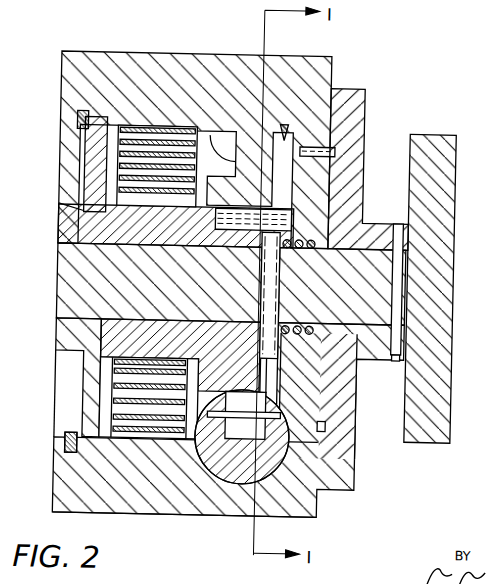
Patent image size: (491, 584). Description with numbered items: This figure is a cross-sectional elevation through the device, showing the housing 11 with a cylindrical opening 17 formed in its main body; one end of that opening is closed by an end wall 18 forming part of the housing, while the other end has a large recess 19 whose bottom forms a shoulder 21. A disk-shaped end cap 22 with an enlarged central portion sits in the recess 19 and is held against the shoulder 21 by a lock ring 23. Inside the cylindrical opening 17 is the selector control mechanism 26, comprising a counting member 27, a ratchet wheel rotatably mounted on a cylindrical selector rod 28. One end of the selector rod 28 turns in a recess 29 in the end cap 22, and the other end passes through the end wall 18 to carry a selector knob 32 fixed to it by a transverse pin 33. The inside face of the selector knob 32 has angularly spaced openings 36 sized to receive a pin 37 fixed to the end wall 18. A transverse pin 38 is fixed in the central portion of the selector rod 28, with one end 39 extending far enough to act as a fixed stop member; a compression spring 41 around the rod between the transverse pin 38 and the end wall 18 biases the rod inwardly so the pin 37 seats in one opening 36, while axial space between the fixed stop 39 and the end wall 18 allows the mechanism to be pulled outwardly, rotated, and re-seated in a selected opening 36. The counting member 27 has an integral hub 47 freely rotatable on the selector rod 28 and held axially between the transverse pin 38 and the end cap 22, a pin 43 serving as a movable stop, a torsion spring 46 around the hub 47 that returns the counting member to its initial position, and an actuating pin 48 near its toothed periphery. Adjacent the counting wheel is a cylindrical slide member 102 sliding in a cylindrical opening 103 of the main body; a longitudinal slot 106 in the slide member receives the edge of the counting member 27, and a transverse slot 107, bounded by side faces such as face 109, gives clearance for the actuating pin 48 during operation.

The housing 11 is at (116, 43).
The cylindrical opening 17 is at (201, 128).
The end wall 18 is at (316, 230).
The recess 19 is at (68, 440).
The shoulder 21 is at (79, 144).
The end cap 22 is at (90, 386).
The lock ring 23 is at (66, 121).
The selector control mechanism 26 is at (281, 124).
The counting member 27 is at (229, 131).
The selector rod 28 is at (78, 287).
The recess 29 is at (82, 316).
The selector knob 32 is at (422, 139).
The transverse pin 33 is at (386, 353).
The openings 36 is at (330, 424).
The pin 37 is at (337, 147).
The transverse pin 38 is at (262, 296).
The fixed stop member 39 is at (262, 348).
The compression spring 41 is at (302, 324).
The pin 43 is at (281, 212).
The torsion spring 46 is at (152, 440).
The hub 47 is at (116, 218).
The actuating pin 48 is at (262, 384).
The slide member 102 is at (249, 513).
The cylindrical opening 103 is at (221, 472).
The longitudinal slot 106 is at (269, 459).
The transverse slot 107 is at (309, 437).
The side face 109 is at (212, 416).